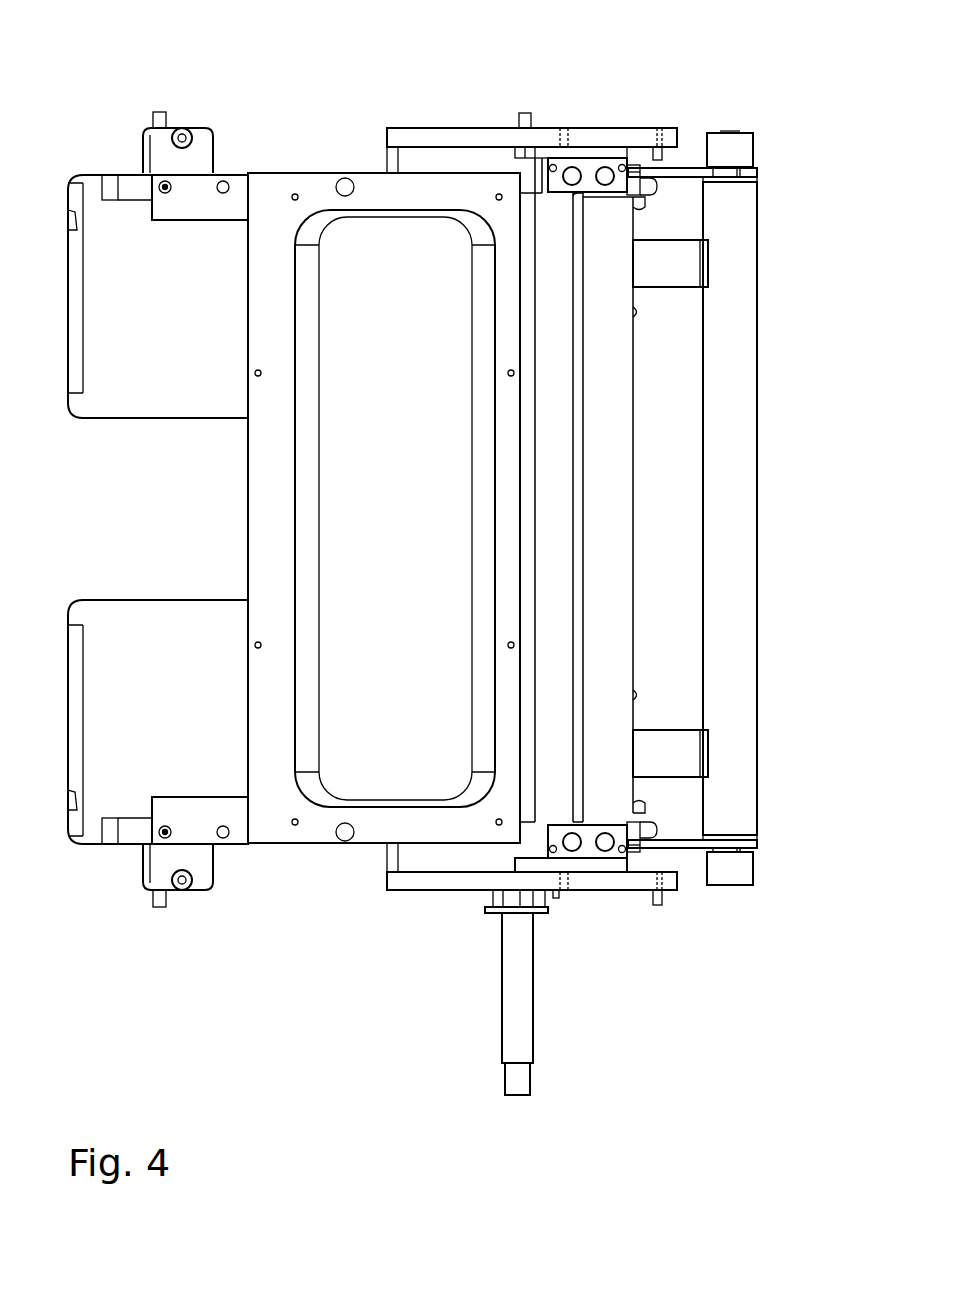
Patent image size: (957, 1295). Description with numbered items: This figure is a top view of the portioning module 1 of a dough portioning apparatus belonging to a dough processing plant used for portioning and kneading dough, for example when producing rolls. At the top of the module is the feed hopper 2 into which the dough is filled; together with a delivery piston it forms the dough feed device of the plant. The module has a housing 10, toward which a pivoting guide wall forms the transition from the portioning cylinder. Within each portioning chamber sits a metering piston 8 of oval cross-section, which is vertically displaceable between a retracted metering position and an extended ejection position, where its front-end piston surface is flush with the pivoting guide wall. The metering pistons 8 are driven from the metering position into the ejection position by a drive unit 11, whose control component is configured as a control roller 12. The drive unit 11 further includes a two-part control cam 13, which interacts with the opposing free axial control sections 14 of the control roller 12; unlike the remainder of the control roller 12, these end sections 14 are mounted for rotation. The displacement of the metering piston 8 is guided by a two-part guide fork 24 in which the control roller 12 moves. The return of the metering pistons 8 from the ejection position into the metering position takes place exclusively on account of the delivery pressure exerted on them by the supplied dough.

The portioning module 1 is at (411, 88).
The feed hopper 2 is at (365, 828).
The metering piston 8 is at (700, 265).
The housing 10 is at (132, 848).
The drive unit 11 is at (758, 480).
The control roller 12 is at (735, 587).
The control cam 13 is at (577, 140).
The control section 14 is at (735, 148).
The guide fork 24 is at (692, 170).